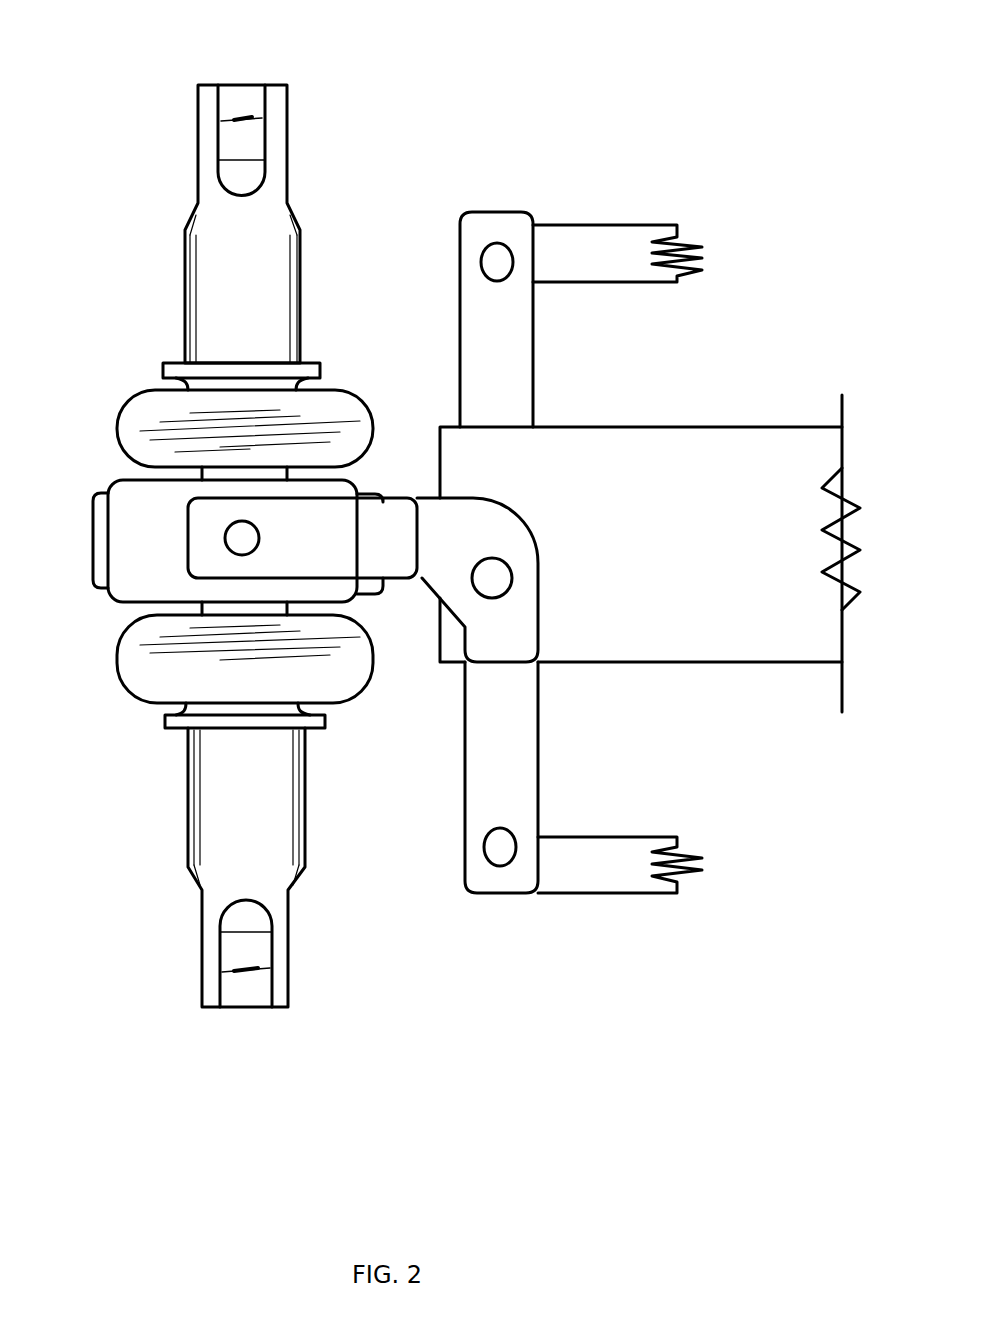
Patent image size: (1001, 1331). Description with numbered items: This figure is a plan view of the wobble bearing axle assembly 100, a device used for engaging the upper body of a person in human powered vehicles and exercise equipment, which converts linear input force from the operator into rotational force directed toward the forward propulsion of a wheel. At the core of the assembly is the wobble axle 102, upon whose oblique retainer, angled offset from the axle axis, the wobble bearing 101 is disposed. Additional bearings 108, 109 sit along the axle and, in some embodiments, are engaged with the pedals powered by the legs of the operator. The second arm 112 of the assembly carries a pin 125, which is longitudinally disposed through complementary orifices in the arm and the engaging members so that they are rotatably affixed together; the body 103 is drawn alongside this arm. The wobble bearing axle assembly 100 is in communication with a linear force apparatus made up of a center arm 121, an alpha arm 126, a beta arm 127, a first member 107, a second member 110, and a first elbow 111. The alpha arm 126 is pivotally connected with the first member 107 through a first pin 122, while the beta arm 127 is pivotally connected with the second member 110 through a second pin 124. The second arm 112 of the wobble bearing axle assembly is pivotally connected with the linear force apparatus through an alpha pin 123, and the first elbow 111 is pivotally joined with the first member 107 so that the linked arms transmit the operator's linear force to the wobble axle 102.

The wobble bearing axle assembly 100 is at (130, 70).
The wobble bearing 101 is at (100, 507).
The wobble axle 102 is at (265, 267).
The central body 103 is at (117, 588).
The first member 107 is at (525, 350).
The additional bearing 108 is at (245, 435).
The additional bearing 109 is at (245, 652).
The second member 110 is at (538, 745).
The first elbow 111 is at (430, 562).
The second arm 112 is at (340, 553).
The center arm 121 is at (650, 553).
The first pin 122 is at (486, 246).
The alpha pin 123 is at (503, 563).
The second pin 124 is at (490, 860).
The pin 125 is at (227, 552).
The alpha arm 126 is at (605, 252).
The beta arm 127 is at (618, 888).